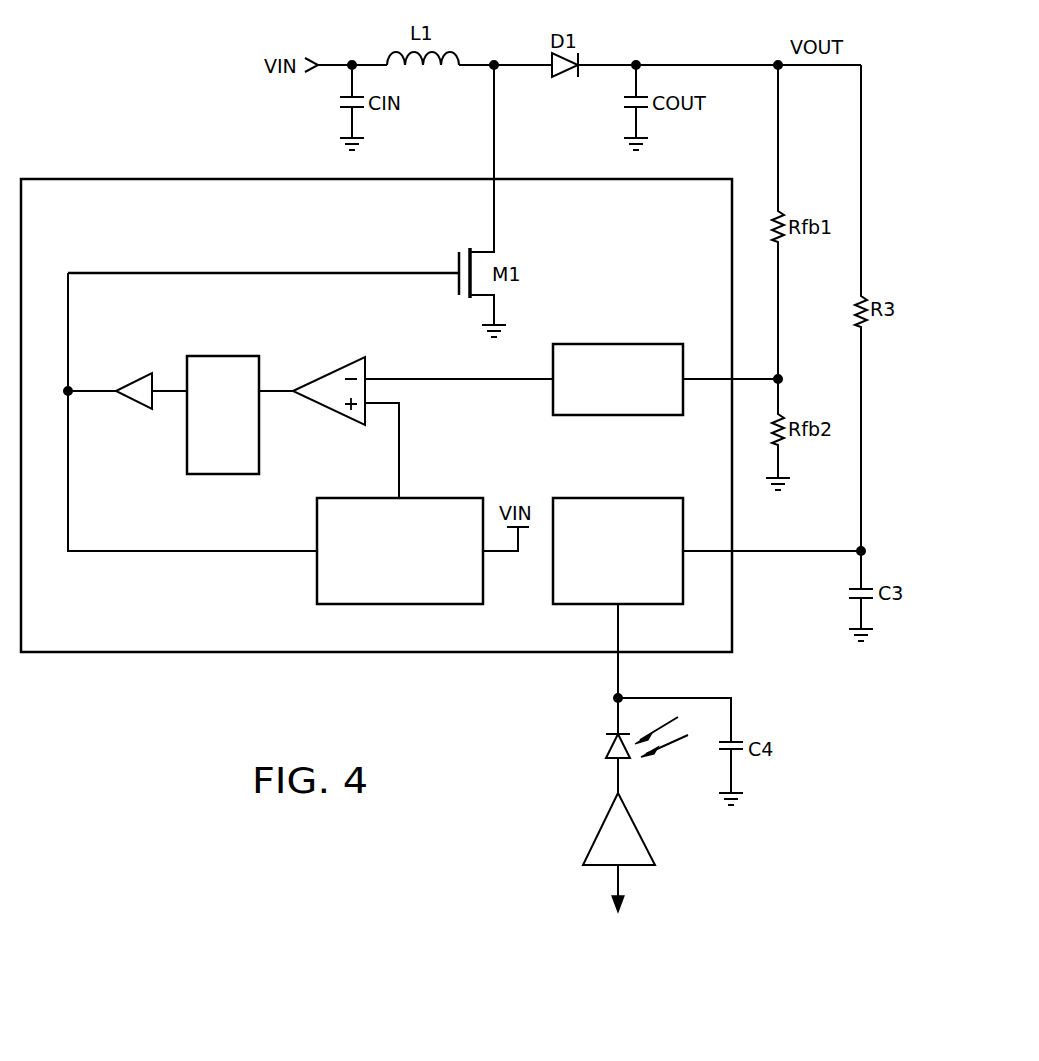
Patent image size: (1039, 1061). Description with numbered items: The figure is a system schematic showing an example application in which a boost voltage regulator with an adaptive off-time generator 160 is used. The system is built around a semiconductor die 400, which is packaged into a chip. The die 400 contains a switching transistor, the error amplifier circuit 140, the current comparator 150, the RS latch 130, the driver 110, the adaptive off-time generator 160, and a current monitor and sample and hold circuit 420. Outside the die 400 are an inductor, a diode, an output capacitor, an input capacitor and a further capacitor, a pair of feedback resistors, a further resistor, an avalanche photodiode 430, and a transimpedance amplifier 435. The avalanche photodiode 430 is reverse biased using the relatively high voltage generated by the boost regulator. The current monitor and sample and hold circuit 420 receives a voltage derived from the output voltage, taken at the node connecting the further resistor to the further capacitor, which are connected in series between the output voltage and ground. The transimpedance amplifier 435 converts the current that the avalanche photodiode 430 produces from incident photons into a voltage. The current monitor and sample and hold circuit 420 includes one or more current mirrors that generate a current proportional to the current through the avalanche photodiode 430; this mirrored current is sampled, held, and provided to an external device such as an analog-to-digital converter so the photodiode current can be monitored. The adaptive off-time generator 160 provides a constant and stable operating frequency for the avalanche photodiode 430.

The semiconductor die 400 is at (206, 177).
The driver 110 is at (135, 409).
The RS latch 130 is at (222, 476).
The current comparator 150 is at (332, 372).
The error amplifier circuit 140 is at (618, 344).
The adaptive off-time generator 160 is at (440, 497).
The current monitor and sample and hold circuit 420 is at (630, 497).
The avalanche photodiode 430 is at (607, 742).
The transimpedance amplifier 435 is at (640, 830).